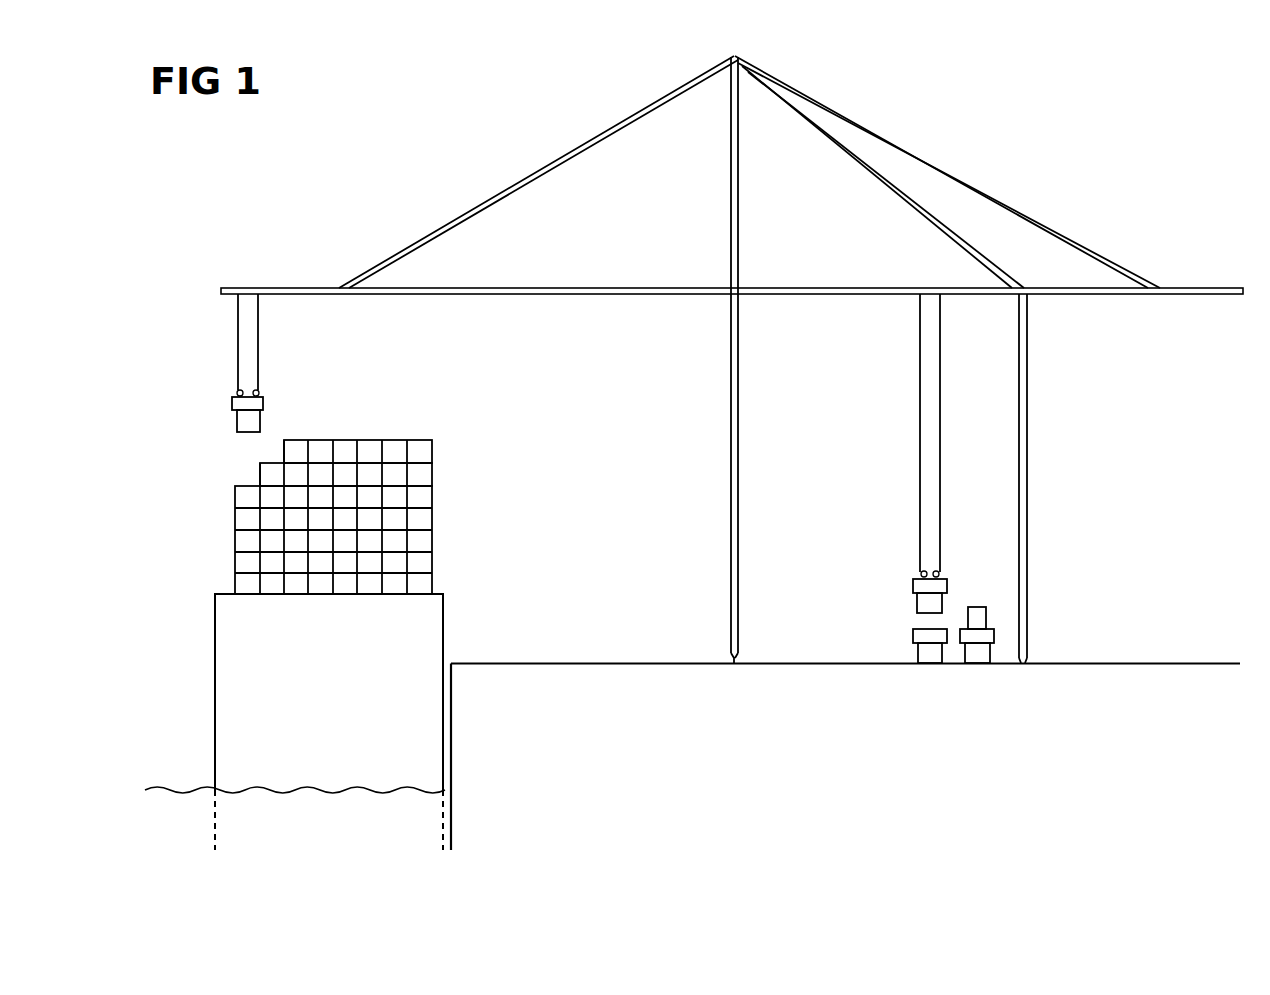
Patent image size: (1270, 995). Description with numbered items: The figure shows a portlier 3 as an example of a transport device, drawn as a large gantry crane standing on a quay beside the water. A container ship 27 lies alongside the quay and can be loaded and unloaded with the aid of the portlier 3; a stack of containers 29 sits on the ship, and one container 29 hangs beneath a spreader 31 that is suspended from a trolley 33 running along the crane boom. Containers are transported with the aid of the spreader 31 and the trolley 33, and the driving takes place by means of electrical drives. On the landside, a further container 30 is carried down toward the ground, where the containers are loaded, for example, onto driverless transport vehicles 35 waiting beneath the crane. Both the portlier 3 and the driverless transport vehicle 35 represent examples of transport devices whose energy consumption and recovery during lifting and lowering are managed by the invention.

The portlier 3 is at (592, 82).
The container ship 27 is at (237, 673).
The container 29 is at (237, 425).
The container 30 is at (977, 607).
The spreader 31 is at (233, 399).
The trolley 33 is at (262, 392).
The driverless transport vehicle 35 is at (1027, 632).